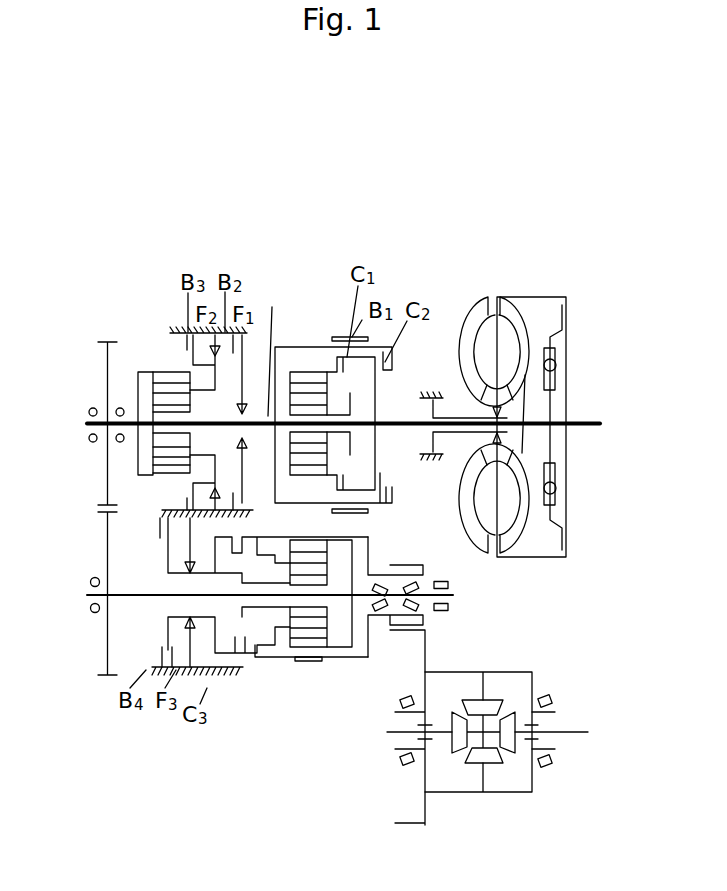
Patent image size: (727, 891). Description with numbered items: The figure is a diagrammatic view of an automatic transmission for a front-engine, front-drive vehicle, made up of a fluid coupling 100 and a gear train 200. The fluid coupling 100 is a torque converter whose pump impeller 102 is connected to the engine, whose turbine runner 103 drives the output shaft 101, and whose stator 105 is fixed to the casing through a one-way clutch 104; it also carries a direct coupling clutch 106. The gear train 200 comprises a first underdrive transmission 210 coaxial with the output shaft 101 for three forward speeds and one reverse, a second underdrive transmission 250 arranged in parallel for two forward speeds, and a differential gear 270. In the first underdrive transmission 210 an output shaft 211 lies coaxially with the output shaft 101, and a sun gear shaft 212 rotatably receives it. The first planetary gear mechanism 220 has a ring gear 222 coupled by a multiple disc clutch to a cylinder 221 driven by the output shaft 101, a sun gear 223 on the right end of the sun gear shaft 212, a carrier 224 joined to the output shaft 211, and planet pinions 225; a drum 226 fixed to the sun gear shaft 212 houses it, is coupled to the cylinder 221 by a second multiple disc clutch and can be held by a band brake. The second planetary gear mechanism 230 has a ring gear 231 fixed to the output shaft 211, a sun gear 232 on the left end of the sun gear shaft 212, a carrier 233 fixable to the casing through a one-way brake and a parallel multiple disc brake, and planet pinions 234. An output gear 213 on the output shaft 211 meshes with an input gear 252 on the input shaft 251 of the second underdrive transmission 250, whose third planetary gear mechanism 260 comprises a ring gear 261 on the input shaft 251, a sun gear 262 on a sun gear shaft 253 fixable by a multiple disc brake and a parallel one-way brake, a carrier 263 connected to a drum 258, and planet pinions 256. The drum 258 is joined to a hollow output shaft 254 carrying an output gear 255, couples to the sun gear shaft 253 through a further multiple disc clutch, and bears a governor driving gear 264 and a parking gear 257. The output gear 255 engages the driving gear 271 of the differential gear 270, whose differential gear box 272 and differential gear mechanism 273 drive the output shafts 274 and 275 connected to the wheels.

The fluid coupling 100 is at (517, 285).
The output shaft of the fluid coupling 101 is at (413, 421).
The pump impeller 102 is at (493, 308).
The turbine runner 103 is at (533, 387).
The one-way clutch 104 is at (510, 407).
The stator 105 is at (500, 456).
The direct coupling clutch 106 is at (565, 322).
The gear train 200 is at (207, 262).
The first underdrive transmission 210 is at (170, 283).
The output shaft of the first underdrive transmission 211 is at (130, 426).
The sun gear shaft 212 is at (271, 393).
The output gear of the first underdrive transmission 213 is at (103, 498).
The first planetary gear mechanism 220 is at (302, 347).
The cylinder 221 is at (395, 345).
The ring gear 222 is at (320, 372).
The sun gear 223 is at (388, 498).
The carrier 224 is at (393, 490).
The planet pinions 225 is at (320, 386).
The drum 226 is at (372, 513).
The second planetary gear mechanism 230 is at (157, 372).
The ring gear 231 is at (150, 370).
The sun gear 232 is at (165, 407).
The carrier 233 is at (172, 372).
The planet pinions 234 is at (165, 387).
The second underdrive transmission 250 is at (213, 685).
The input shaft of the second underdrive transmission 251 is at (138, 597).
The input gear 252 is at (107, 663).
The sun gear shaft 253 is at (183, 630).
The hollow output shaft 254 is at (428, 572).
The output gear 255 is at (410, 563).
The planet pinions 256 is at (312, 648).
The parking gear 257 is at (405, 630).
The drum 258 is at (327, 650).
The third planetary gear mechanism 260 is at (315, 647).
The ring gear 261 is at (338, 660).
The sun gear 262 is at (366, 622).
The carrier 263 is at (253, 608).
The governor driving gear 264 is at (305, 622).
The differential gear 270 is at (546, 657).
The driving gear 271 is at (428, 650).
The differential gear box 272 is at (470, 798).
The differential gear mechanism 273 is at (497, 770).
The output shaft 274 is at (393, 735).
The output shaft 275 is at (572, 738).